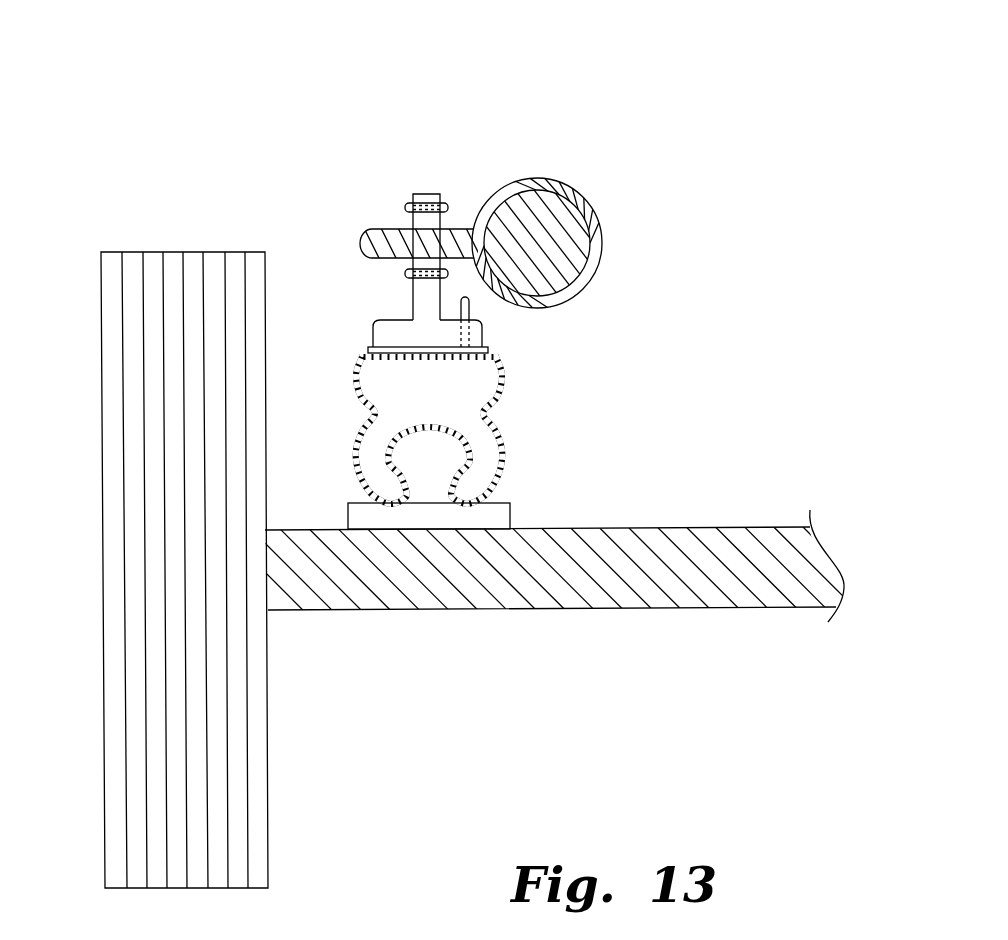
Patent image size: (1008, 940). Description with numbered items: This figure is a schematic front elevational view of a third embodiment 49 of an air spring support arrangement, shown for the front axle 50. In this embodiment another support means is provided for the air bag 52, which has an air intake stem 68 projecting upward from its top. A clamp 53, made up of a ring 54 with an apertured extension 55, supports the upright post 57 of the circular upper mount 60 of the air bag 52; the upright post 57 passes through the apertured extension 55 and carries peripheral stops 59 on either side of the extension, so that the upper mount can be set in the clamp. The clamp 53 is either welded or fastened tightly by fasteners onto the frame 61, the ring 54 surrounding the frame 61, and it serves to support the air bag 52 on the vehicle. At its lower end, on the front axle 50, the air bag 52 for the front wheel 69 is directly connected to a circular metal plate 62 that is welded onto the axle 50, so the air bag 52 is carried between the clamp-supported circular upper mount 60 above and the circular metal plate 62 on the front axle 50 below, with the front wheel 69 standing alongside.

The third embodiment 49 is at (446, 269).
The front axle 50 is at (687, 607).
The air bag 52 is at (437, 397).
The clamp 53 is at (578, 193).
The ring 54 is at (600, 210).
The apertured extension 55 is at (362, 232).
The upright post 57 is at (413, 302).
The peripheral stops 59 is at (404, 206).
The circular upper mount 60 is at (368, 348).
The frame 61 is at (562, 260).
The circular metal plate 62 is at (512, 500).
The air intake stem 68 is at (469, 308).
The front wheel 69 is at (153, 250).